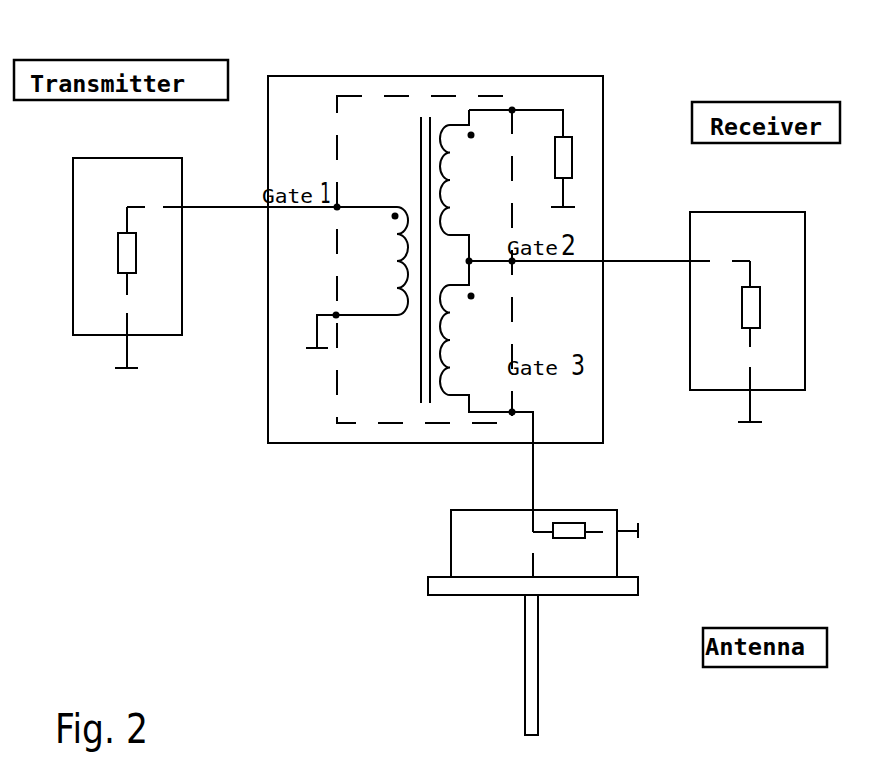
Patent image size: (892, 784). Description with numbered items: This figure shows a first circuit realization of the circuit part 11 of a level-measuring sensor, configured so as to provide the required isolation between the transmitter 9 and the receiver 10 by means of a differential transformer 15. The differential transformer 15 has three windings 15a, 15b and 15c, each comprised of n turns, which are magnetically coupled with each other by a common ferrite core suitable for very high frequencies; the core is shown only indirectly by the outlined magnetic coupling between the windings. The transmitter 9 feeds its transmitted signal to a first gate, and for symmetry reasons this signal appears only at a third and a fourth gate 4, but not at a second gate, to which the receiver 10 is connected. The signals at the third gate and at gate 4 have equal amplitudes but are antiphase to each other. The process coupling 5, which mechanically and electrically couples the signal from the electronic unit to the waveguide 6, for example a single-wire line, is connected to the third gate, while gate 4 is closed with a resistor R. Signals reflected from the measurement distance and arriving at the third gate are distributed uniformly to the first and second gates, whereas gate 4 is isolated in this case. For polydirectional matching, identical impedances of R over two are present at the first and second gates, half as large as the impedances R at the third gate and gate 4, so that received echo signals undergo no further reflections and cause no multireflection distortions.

The gate 4 is at (512, 110).
The process coupling 5 is at (617, 517).
The waveguide 6 is at (538, 672).
The transmitter 9 is at (93, 157).
The receiver 10 is at (785, 210).
The circuit part 11 is at (603, 118).
The differential transformer 15 is at (337, 117).
The winding 15a is at (390, 273).
The winding 15b is at (470, 202).
The winding 15c is at (470, 318).